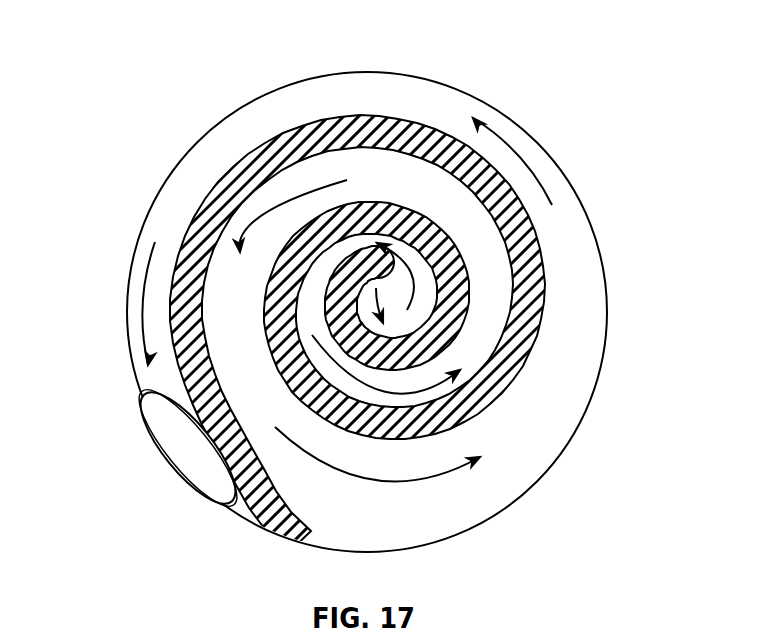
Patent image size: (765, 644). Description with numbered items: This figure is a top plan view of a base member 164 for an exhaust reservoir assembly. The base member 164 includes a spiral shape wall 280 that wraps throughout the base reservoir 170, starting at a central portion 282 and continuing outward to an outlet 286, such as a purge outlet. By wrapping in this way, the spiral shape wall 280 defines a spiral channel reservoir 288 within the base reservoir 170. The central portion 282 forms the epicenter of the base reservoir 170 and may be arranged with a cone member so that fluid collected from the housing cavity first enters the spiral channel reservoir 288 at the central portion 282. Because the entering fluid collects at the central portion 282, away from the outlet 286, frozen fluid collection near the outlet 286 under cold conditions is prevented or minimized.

The base member 164 is at (470, 93).
The base reservoir 170 is at (570, 205).
The spiral shape wall 280 is at (168, 205).
The central portion 282 is at (368, 307).
The outlet 286 is at (148, 440).
The spiral channel reservoir 288 is at (601, 381).